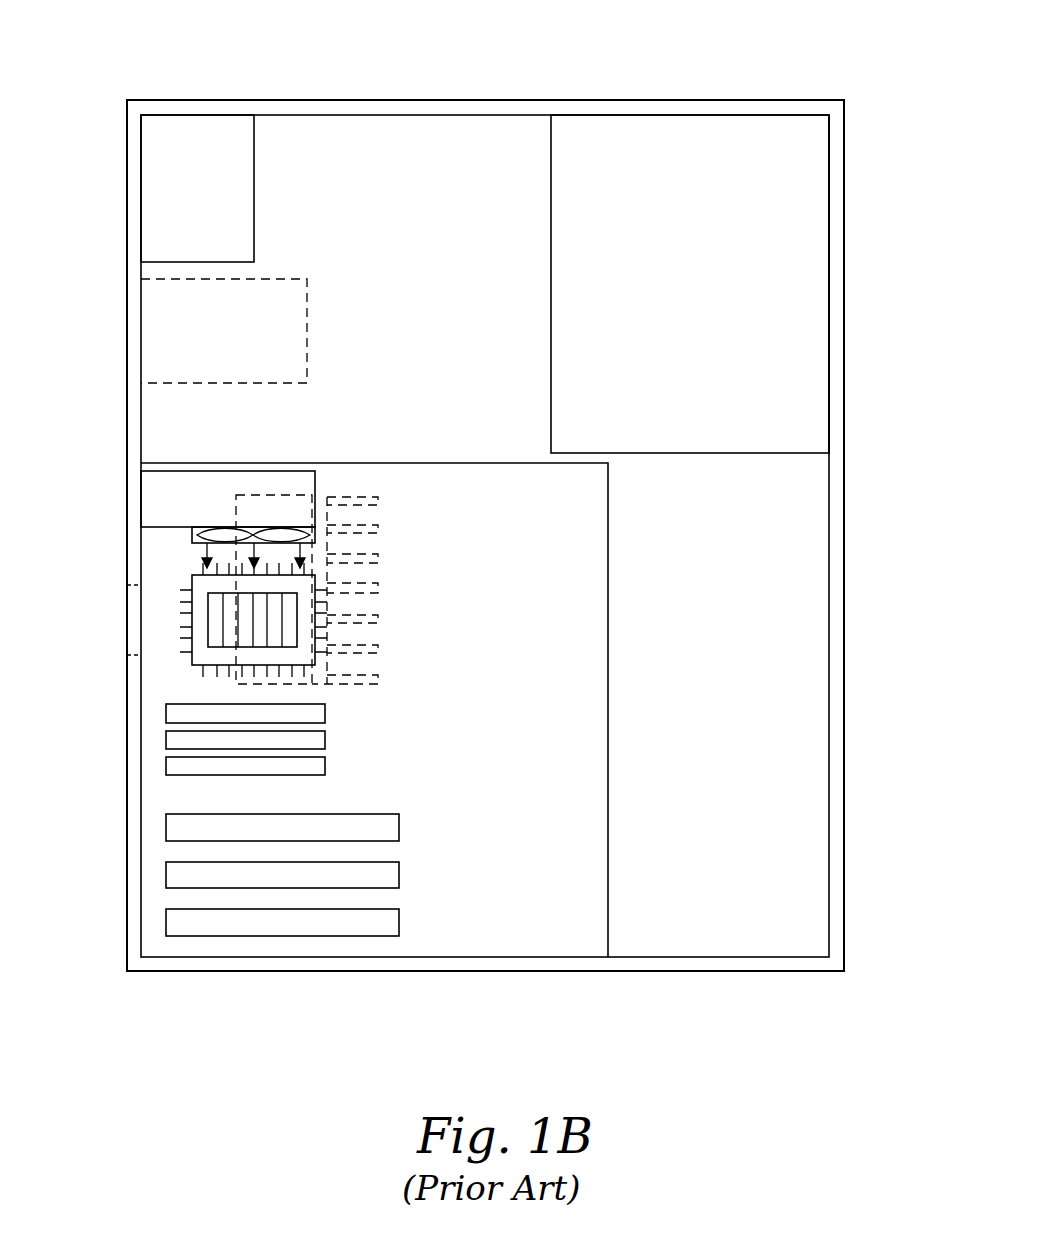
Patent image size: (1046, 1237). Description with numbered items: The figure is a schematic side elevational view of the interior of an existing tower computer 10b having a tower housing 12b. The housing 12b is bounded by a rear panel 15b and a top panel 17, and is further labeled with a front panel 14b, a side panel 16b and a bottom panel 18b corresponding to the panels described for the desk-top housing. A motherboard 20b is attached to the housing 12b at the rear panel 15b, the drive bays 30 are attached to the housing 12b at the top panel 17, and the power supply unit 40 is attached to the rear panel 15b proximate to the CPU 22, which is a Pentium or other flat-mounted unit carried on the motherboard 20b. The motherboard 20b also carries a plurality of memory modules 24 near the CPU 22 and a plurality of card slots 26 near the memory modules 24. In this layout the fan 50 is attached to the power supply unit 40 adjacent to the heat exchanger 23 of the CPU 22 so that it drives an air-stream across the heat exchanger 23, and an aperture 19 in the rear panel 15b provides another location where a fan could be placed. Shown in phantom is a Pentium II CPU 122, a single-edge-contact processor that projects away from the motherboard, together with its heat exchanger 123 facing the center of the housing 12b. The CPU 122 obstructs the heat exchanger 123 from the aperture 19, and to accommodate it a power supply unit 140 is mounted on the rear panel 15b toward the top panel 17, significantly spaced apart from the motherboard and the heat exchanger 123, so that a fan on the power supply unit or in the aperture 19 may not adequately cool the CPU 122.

The tower computer 10b is at (733, 72).
The tower housing 12b is at (845, 100).
The right side wall 14b is at (836, 640).
The rear panel 15b is at (135, 790).
The motherboard region 16b is at (742, 568).
The top panel 17 is at (505, 104).
The bottom wall 18b is at (688, 964).
The aperture 19 is at (127, 666).
The motherboard 20b is at (592, 692).
The CPU 22 is at (200, 637).
The heat exchanger 23 is at (215, 602).
The memory modules 24 is at (316, 765).
The card slots 26 is at (390, 826).
The drive bays 30 is at (245, 180).
The power supply unit 40 is at (237, 480).
The fan 50 is at (192, 540).
The Pentium II CPU 122 is at (303, 498).
The heat exchanger 123 is at (360, 497).
The power supply unit 140 is at (308, 300).